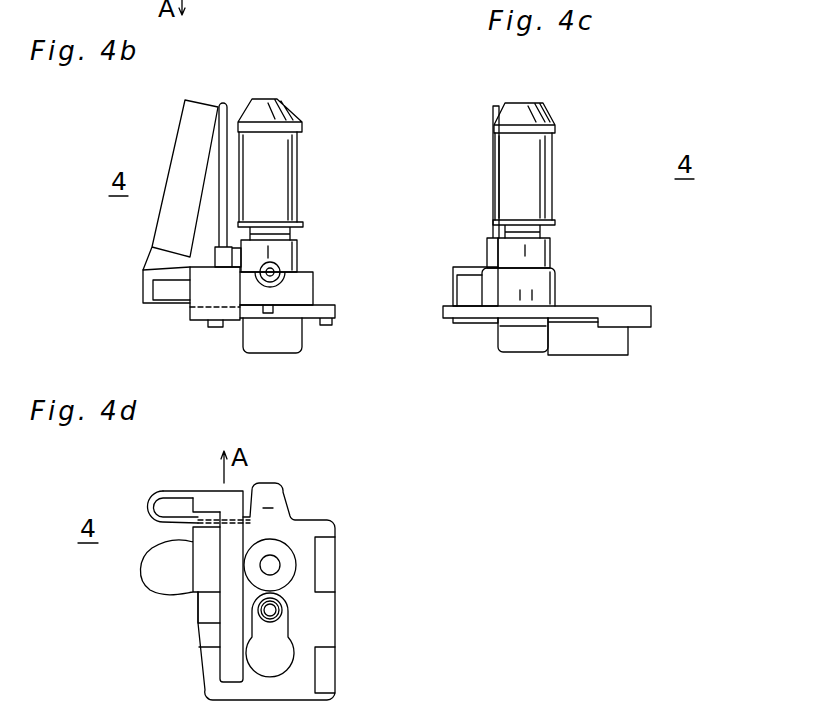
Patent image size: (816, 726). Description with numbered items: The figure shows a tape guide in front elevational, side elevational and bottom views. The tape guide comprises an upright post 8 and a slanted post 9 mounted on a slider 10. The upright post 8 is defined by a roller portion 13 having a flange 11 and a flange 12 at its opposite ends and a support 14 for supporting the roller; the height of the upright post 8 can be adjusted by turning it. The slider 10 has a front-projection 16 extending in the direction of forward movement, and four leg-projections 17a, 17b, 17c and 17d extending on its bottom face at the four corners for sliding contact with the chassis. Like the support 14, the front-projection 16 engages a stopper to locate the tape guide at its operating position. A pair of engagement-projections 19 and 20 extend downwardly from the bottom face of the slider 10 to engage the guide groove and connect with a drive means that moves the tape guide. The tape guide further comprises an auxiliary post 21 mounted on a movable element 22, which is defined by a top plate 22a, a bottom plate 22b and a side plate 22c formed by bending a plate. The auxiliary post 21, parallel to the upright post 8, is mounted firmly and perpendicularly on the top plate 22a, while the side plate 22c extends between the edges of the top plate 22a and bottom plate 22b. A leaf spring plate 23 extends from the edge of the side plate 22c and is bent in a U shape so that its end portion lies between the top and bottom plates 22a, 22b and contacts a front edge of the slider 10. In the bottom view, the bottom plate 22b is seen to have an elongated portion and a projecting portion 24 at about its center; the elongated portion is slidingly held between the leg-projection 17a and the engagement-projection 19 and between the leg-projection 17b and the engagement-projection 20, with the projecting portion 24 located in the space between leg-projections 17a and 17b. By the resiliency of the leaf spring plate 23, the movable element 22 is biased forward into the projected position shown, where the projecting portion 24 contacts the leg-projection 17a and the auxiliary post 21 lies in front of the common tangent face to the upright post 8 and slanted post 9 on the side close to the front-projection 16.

In FIG. 4B, the upright post 8 is at (314, 151).
In FIG. 4C, the upright post 8 is at (588, 186).
In FIG. 4B, the slanted post 9 is at (188, 117).
In FIG. 4B, the slider 10 is at (322, 308).
In FIG. 4C, the slider 10 is at (560, 313).
In FIG. 4B, the flange 11 is at (280, 108).
In FIG. 4C, the flange 11 is at (545, 108).
In FIG. 4B, the flange 12 is at (298, 221).
In FIG. 4C, the flange 12 is at (557, 223).
In FIG. 4B, the roller portion 13 is at (287, 172).
In FIG. 4C, the roller portion 13 is at (540, 160).
In FIG. 4B, the support 14 is at (297, 252).
In FIG. 4C, the support 14 is at (543, 248).
In FIG. 4B, the front-projection 16 is at (266, 315).
In FIG. 4D, the front-projection 16 is at (277, 493).
In FIG. 4B, the leg-projection 17a is at (218, 327).
In FIG. 4D, the leg-projection 17a is at (200, 568).
In FIG. 4D, the leg-projection 17b is at (208, 677).
In FIG. 4B, the leg-projection 17c is at (327, 323).
In FIG. 4C, the leg-projection 17c is at (505, 319).
In FIG. 4D, the leg-projection 17c is at (328, 550).
In FIG. 4C, the leg-projection 17d is at (642, 330).
In FIG. 4D, the leg-projection 17d is at (327, 660).
In FIG. 4B, the engagement-projection 19 is at (288, 340).
In FIG. 4C, the engagement-projection 19 is at (525, 343).
In FIG. 4D, the engagement-projection 19 is at (283, 582).
In FIG. 4C, the engagement-projection 20 is at (603, 343).
In FIG. 4D, the engagement-projection 20 is at (273, 667).
In FIG. 4B, the auxiliary post 21 is at (224, 105).
In FIG. 4C, the auxiliary post 21 is at (496, 107).
In FIG. 4B, the movable element 22 is at (205, 0).
In FIG. 4C, the movable element 22 is at (446, 302).
In FIG. 4B, the top plate 22a is at (240, 0).
In FIG. 4C, the top plate 22a is at (470, 262).
In FIG. 4C, the bottom plate 22b is at (468, 322).
In FIG. 4D, the bottom plate 22b is at (233, 497).
In FIG. 4B, the side plate 22c is at (200, 304).
In FIG. 4C, the side plate 22c is at (453, 266).
In FIG. 4B, the leaf spring plate 23 is at (160, 294).
In FIG. 4C, the leaf spring plate 23 is at (465, 288).
In FIG. 4D, the leaf spring plate 23 is at (152, 500).
In FIG. 4D, the projecting portion 24 is at (198, 608).